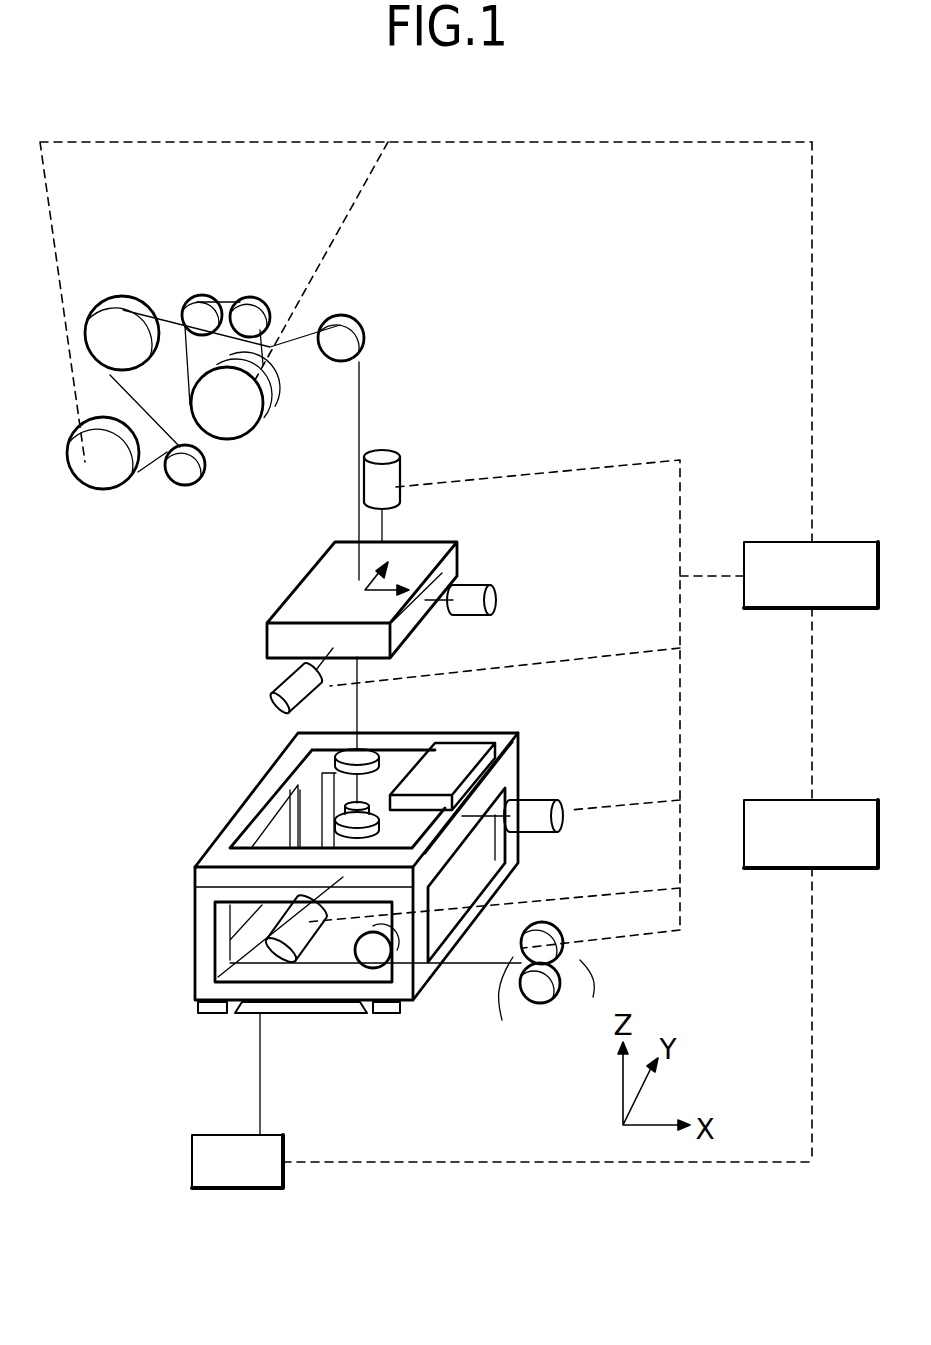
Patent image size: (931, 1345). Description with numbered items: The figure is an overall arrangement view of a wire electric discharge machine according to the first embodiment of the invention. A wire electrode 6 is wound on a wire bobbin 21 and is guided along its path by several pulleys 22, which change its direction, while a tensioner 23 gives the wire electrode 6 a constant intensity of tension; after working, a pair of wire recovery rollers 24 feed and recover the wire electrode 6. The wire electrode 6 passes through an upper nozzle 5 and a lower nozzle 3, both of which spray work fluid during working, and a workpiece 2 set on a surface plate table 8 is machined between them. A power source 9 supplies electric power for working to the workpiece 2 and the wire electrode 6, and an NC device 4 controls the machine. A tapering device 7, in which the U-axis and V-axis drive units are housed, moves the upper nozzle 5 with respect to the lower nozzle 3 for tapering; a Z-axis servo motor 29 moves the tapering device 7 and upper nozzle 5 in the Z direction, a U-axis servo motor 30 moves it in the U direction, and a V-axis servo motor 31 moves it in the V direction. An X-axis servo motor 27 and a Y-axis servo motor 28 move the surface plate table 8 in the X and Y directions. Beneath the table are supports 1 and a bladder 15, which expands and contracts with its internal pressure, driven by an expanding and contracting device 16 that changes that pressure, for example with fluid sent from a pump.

The leg 1 is at (213, 1014).
The workpiece 2 is at (473, 747).
The lower nozzle 3 is at (347, 817).
The NC device 4 is at (845, 540).
The upper nozzle 5 is at (367, 755).
The wire electrode 6 is at (362, 405).
The tapering device 7 is at (428, 548).
The surface plate table 8 is at (208, 910).
The power source 9 is at (845, 800).
The bladder 15 is at (300, 1014).
The expanding and contracting device 16 is at (190, 1172).
The wire bobbin 21 is at (107, 492).
The pulley 22 is at (340, 330).
The tensioner 23 is at (233, 420).
The wire recovery roller 24 is at (536, 993).
The X-axis servo motor 27 is at (540, 800).
The Y-axis servo motor 28 is at (282, 931).
The Z-axis servo motor 29 is at (400, 447).
The U-axis servo motor 30 is at (492, 578).
The V-axis servo motor 31 is at (275, 700).